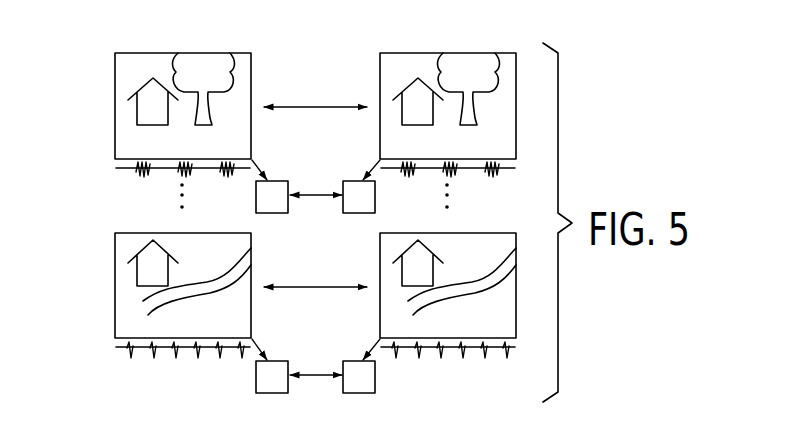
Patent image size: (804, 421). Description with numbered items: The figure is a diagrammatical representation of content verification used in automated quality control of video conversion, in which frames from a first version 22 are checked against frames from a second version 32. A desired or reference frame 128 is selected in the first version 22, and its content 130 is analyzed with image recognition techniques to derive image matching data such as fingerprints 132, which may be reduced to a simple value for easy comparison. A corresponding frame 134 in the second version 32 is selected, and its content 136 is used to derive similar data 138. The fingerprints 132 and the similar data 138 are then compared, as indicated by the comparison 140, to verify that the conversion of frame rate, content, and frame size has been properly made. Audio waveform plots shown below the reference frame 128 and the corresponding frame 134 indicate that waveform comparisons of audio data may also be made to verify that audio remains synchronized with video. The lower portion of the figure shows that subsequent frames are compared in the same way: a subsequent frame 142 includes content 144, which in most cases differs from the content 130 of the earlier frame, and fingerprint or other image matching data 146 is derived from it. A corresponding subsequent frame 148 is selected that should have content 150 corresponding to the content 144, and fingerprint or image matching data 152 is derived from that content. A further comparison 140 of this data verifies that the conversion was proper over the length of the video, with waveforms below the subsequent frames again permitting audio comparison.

The first version 22 is at (127, 47).
The second version 32 is at (505, 45).
The reference frame 128 is at (115, 106).
The content 130 is at (199, 152).
The fingerprints 132 is at (257, 196).
The corresponding frame 134 is at (380, 133).
The content 136 is at (464, 152).
The similar data 138 is at (375, 195).
The comparison 140 is at (317, 107).
The subsequent frame 142 is at (115, 287).
The content 144 is at (199, 332).
The fingerprint or image matching data 146 is at (257, 376).
The corresponding subsequent frame 148 is at (380, 313).
The content 150 is at (464, 332).
The fingerprint or image matching data 152 is at (375, 375).